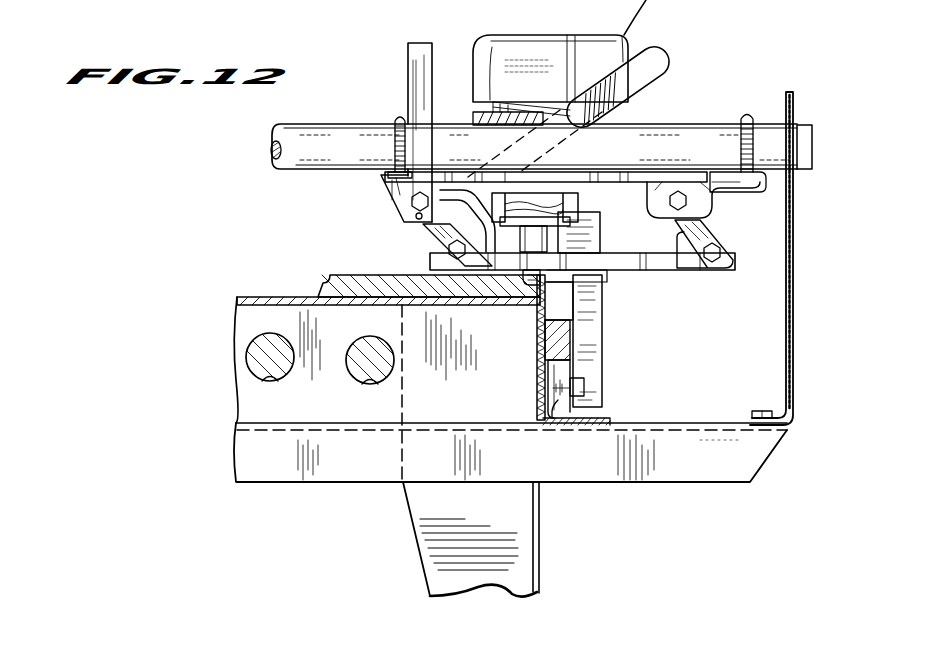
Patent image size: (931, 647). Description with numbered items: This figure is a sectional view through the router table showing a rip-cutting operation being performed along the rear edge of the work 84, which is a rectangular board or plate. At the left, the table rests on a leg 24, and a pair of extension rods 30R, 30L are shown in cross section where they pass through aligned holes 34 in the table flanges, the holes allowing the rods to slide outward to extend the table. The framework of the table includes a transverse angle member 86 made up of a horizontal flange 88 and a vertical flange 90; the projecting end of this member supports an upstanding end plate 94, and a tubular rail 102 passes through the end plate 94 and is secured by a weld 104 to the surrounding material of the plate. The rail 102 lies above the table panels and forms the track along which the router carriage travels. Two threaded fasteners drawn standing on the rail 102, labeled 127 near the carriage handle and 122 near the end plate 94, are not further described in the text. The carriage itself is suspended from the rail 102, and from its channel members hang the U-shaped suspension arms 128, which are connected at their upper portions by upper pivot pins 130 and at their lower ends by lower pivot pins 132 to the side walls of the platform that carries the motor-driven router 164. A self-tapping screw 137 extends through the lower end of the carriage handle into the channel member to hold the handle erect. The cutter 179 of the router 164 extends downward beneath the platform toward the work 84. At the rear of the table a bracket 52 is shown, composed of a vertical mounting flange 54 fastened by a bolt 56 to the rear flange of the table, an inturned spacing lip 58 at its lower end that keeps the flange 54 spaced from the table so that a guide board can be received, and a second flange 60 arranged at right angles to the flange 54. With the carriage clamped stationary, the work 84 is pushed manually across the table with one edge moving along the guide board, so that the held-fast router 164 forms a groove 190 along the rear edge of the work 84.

The leg 24 is at (455, 575).
The extension rod 30R is at (260, 352).
The extension rod 30L is at (378, 338).
The hole 34 is at (270, 378).
The bracket 52 is at (612, 357).
The vertical mounting flange 54 is at (572, 366).
The bolt 56 is at (586, 392).
The inturned spacing lip 58 is at (570, 432).
The second flange 60 is at (590, 343).
The work 84 is at (318, 290).
The transverse angle member 86 is at (320, 488).
The horizontal flange 88 is at (236, 426).
The vertical flange 90 is at (695, 470).
The end plate 94 is at (794, 365).
The tubular rail 102 is at (278, 151).
The weld 104 is at (682, 98).
The clamp bolt 122 is at (750, 112).
The clamp bolt 127 is at (396, 118).
The U-shaped suspension arm 128 is at (420, 248).
The upper pivot pin 130 is at (412, 200).
The lower pivot pin 132 is at (720, 270).
The self-tapping screw 137 is at (416, 216).
The motor-driven router 164 is at (652, 42).
The cutter 179 is at (532, 286).
The groove 190 is at (540, 320).